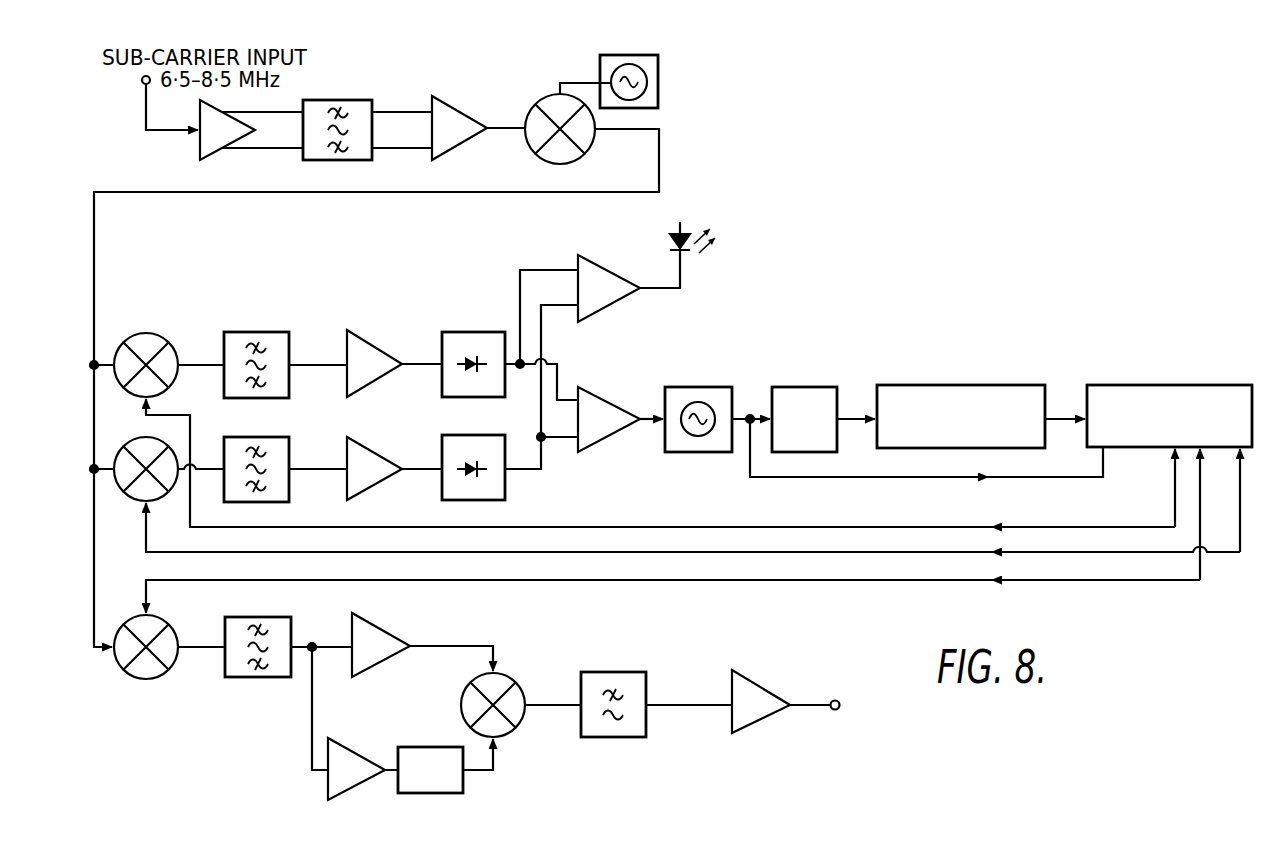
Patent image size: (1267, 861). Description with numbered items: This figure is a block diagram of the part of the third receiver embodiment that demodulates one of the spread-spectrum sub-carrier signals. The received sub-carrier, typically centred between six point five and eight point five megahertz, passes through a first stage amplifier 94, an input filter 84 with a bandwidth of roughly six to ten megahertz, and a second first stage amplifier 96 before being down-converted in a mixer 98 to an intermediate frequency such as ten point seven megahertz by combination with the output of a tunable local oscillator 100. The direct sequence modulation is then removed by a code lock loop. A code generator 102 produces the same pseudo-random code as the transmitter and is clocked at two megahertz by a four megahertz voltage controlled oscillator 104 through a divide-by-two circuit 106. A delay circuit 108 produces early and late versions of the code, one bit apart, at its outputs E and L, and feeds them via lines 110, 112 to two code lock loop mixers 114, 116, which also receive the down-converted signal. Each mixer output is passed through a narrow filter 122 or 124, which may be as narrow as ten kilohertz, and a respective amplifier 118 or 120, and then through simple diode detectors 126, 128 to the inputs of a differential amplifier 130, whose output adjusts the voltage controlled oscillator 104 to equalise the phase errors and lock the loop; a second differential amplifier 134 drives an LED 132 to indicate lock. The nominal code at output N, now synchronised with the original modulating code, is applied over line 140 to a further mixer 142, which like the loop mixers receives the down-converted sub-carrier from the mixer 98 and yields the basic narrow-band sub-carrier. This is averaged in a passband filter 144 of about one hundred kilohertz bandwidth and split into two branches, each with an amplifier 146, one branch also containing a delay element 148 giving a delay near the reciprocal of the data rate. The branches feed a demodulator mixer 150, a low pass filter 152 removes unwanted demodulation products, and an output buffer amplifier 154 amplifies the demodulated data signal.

The first stage amplifier 94 is at (213, 160).
The input filter 84 is at (357, 160).
The first stage amplifier 96 is at (462, 144).
The mixer 98 is at (540, 102).
The local oscillator 100 is at (670, 48).
The code lock loop mixer 114 is at (148, 333).
The code lock loop mixer 116 is at (147, 439).
The filter 122 is at (253, 332).
The filter 124 is at (289, 453).
The amplifier 118 is at (373, 345).
The amplifier 120 is at (372, 457).
The diode detector 126 is at (470, 332).
The diode detector 128 is at (497, 420).
The second differential amplifier 134 is at (598, 265).
The LED 132 is at (670, 242).
The differential amplifier 130 is at (605, 438).
The voltage controlled oscillator 104 is at (733, 387).
The divide-by-two circuit 106 is at (820, 387).
The code generator 102 is at (990, 385).
The delay circuit 108 is at (1182, 385).
The line 110 is at (758, 527).
The line 112 is at (830, 552).
The line 140 is at (890, 580).
The further mixer 142 is at (150, 680).
The passband filter 144 is at (272, 678).
The amplifier 146 is at (366, 626).
The delay element 148 is at (437, 747).
The demodulator mixer 150 is at (509, 679).
The low pass filter 152 is at (600, 672).
The output buffer amplifier 154 is at (760, 688).